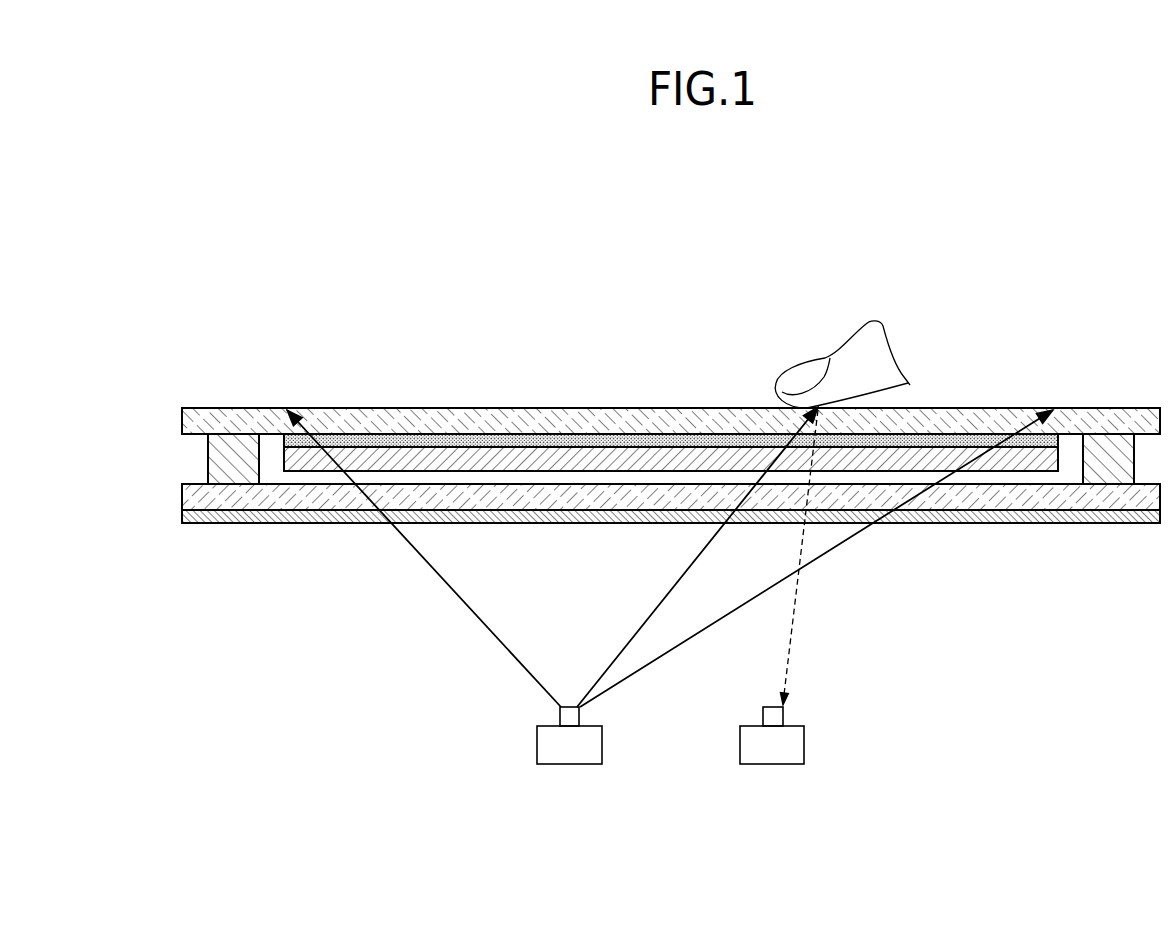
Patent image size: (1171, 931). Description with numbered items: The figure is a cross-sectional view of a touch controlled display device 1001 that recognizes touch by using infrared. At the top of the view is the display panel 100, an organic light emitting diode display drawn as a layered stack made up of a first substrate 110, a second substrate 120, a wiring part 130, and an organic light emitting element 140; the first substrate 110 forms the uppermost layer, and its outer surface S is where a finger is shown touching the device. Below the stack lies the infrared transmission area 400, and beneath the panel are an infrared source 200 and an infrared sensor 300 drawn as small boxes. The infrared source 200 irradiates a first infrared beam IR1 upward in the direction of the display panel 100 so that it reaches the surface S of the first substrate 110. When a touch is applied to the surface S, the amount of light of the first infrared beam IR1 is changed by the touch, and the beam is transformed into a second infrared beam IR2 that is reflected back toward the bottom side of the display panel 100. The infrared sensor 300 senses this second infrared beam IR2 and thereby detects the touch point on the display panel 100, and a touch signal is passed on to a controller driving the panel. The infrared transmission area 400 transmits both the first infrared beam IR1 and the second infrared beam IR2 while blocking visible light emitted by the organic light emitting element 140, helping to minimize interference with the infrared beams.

The touch controlled display device 1001 is at (711, 262).
The display panel 100 is at (683, 341).
The first substrate 110 is at (479, 413).
The second substrate 120 is at (546, 500).
The wiring part 130 is at (605, 440).
The organic light emitting element 140 is at (668, 462).
The infrared transmission area 400 is at (257, 523).
The infrared source 200 is at (537, 748).
The infrared sensor 300 is at (804, 748).
The surface S is at (997, 408).
The first infrared beam IR1 is at (463, 603).
The second infrared beam IR2 is at (793, 617).